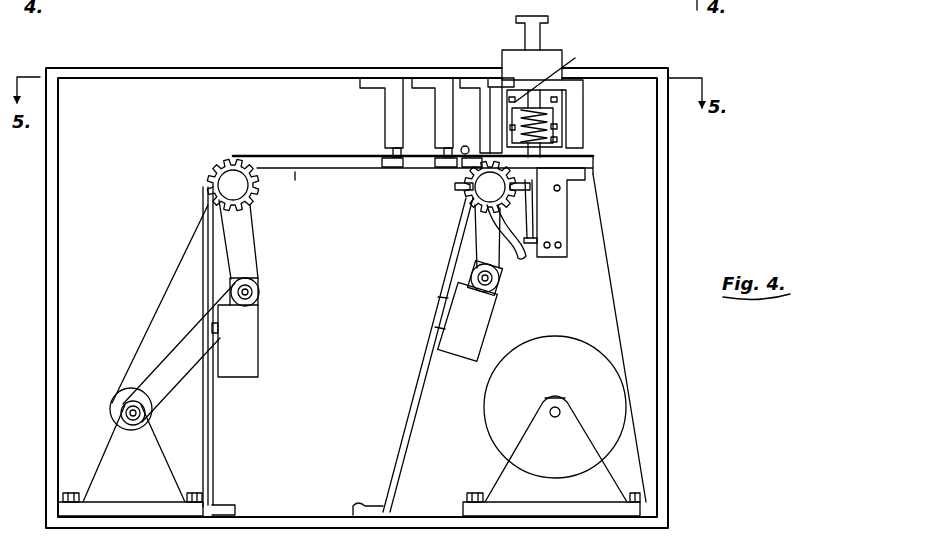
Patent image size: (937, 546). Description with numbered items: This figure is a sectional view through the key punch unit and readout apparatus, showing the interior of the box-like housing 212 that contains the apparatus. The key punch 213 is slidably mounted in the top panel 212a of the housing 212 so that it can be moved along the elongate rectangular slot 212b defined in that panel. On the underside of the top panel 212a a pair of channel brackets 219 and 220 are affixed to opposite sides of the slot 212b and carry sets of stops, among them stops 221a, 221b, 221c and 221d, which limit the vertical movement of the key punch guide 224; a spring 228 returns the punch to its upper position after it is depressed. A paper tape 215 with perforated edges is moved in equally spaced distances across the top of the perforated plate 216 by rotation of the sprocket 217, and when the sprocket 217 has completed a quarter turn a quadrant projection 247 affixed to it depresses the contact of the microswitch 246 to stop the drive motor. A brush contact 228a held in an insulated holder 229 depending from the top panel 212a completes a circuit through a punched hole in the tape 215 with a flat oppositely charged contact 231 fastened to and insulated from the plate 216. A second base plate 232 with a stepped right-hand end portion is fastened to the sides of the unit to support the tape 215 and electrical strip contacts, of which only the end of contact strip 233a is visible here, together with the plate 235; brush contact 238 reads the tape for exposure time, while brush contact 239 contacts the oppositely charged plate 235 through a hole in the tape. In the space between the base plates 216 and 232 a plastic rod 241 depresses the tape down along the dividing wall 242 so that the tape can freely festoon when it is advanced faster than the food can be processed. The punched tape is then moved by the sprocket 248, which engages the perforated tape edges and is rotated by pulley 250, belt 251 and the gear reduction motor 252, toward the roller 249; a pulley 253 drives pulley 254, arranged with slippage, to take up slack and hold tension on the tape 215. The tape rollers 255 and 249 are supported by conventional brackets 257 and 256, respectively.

The housing 212 is at (663, 170).
The top panel 212a is at (244, 70).
The elongate rectangular slot 212b is at (543, 70).
The key punch 213 is at (556, 50).
The paper tape 215 is at (297, 135).
The perforated plate 216 is at (583, 163).
The sprocket 217 is at (467, 208).
The channel bracket 219 is at (512, 127).
The channel bracket 220 is at (562, 113).
The stop 221a is at (566, 67).
The stop 221b is at (557, 99).
The stop 221c is at (510, 100).
The stop 221d is at (558, 141).
The key punch guide 224 is at (557, 131).
The spring 228 is at (560, 148).
The brush contact 228a is at (478, 163).
The insulated holder 229 is at (490, 127).
The flat contact 231 is at (467, 194).
The second base plate 232 is at (297, 173).
The electrical strip contact 233a is at (440, 167).
The oppositely charged plate 235 is at (387, 166).
The brush contact 238 is at (440, 155).
The electrical brush contact 239 is at (388, 156).
The plastic rod 241 is at (470, 138).
The dividing wall 242 is at (417, 382).
The microswitch 246 is at (557, 218).
The quadrant projection 247 is at (494, 283).
The sprocket 248 is at (212, 172).
The roller 249 is at (125, 392).
The pulley 250 is at (222, 185).
The belt 251 is at (255, 240).
The gear reduction motor 252 is at (250, 334).
The pulley 253 is at (258, 299).
The pulley 254 is at (135, 426).
The tape roller 255 is at (565, 395).
The bracket 256 is at (145, 499).
The bracket 257 is at (572, 481).